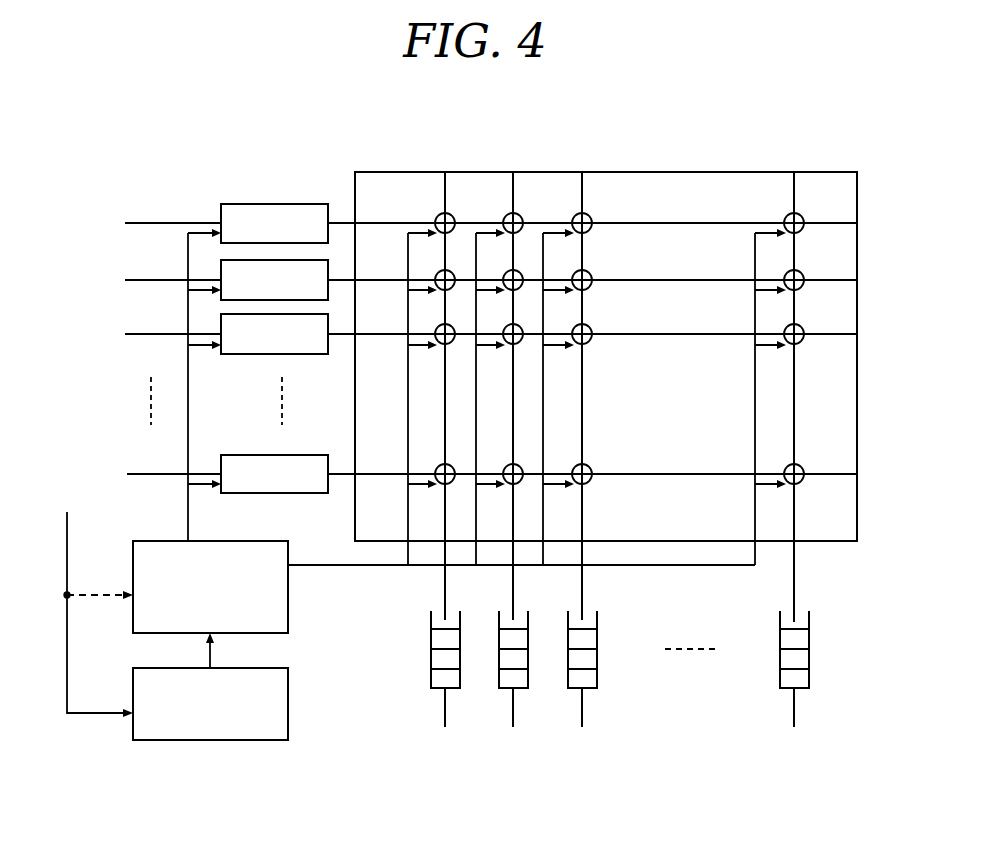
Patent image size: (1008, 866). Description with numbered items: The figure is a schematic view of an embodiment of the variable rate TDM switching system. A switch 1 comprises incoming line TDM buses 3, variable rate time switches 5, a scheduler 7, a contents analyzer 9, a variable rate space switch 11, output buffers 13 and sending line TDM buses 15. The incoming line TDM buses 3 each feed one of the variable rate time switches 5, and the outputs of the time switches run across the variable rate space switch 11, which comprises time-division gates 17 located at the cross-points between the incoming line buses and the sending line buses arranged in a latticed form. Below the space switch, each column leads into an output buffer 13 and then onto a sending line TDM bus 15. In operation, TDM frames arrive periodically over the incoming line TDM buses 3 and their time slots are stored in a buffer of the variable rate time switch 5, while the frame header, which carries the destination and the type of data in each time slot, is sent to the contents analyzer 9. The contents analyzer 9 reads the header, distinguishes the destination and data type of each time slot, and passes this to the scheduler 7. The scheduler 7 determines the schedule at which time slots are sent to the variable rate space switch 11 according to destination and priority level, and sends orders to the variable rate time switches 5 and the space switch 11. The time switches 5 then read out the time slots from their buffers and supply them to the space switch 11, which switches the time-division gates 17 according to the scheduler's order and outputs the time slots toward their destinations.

The switch 1 is at (850, 596).
The incoming line TDM bus 3 is at (142, 223).
The variable rate time switch 5 is at (221, 207).
The scheduler 7 is at (133, 585).
The contents analyzer 9 is at (133, 702).
The variable rate space switch 11 is at (660, 172).
The output buffer 13 is at (431, 678).
The sending line TDM bus 15 is at (445, 717).
The time-division gate 17 is at (867, 436).